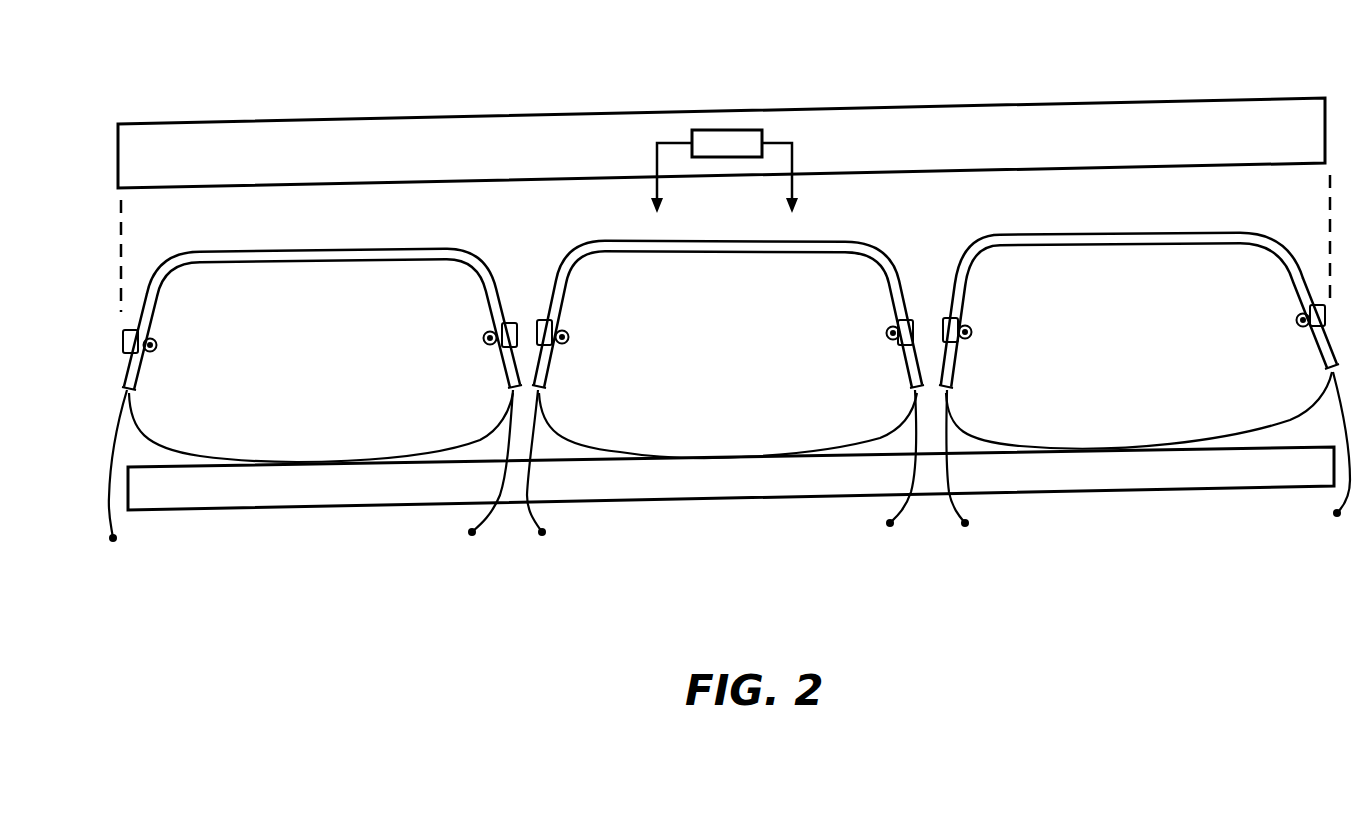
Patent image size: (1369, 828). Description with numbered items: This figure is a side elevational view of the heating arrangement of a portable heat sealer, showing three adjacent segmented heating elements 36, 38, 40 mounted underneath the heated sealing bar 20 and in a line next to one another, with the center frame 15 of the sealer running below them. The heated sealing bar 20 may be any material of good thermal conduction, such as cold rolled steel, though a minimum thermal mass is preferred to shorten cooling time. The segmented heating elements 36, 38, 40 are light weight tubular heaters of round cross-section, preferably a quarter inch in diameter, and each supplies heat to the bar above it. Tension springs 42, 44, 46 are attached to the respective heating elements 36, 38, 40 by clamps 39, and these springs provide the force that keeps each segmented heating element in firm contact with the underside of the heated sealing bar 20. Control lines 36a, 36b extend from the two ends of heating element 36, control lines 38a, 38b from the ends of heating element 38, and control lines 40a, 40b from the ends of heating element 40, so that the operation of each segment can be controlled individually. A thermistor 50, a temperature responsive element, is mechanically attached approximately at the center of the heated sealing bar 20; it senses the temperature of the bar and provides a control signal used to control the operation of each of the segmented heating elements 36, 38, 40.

The center frame 15 is at (1225, 473).
The heated sealing bar 20 is at (308, 142).
The segmented heating element 36 is at (1107, 250).
The control line 36a is at (966, 475).
The control line 36b is at (1338, 461).
The segmented heating element 38 is at (705, 257).
The control line 38a is at (542, 478).
The control line 38b is at (893, 475).
The clamp 39 is at (160, 348).
The segmented heating element 40 is at (300, 265).
The control line 40a is at (112, 482).
The control line 40b is at (480, 478).
The tension spring 42 is at (1000, 440).
The tension spring 44 is at (595, 447).
The tension spring 46 is at (175, 450).
The thermistor 50 is at (722, 130).